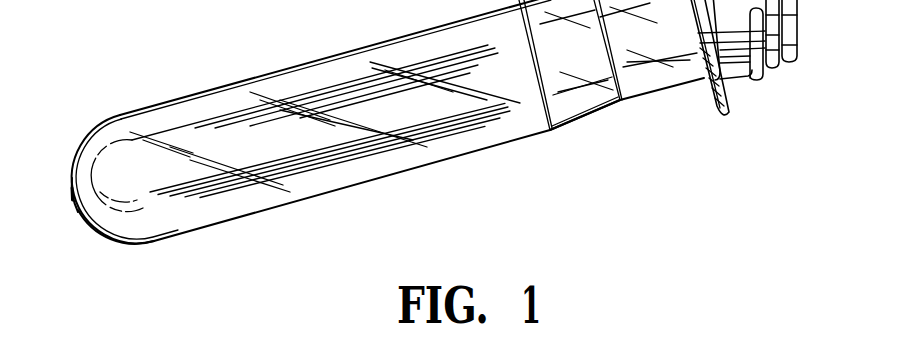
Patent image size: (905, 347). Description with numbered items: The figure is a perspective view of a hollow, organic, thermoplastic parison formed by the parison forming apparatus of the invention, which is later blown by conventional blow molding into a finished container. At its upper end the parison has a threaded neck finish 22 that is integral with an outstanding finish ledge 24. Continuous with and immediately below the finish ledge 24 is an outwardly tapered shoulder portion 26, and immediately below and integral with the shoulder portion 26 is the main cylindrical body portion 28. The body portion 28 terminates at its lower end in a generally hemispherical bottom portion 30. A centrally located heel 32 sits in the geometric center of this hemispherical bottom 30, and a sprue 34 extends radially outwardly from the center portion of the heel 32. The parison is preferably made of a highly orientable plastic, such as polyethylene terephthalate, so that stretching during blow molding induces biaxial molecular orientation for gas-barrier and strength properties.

The threaded neck finish 22 is at (758, 75).
The finish ledge 24 is at (723, 112).
The shoulder portion 26 is at (591, 107).
The main cylindrical body portion 28 is at (378, 180).
The bottom portion 30 is at (113, 240).
The heel 32 is at (75, 202).
The sprue 34 is at (72, 195).